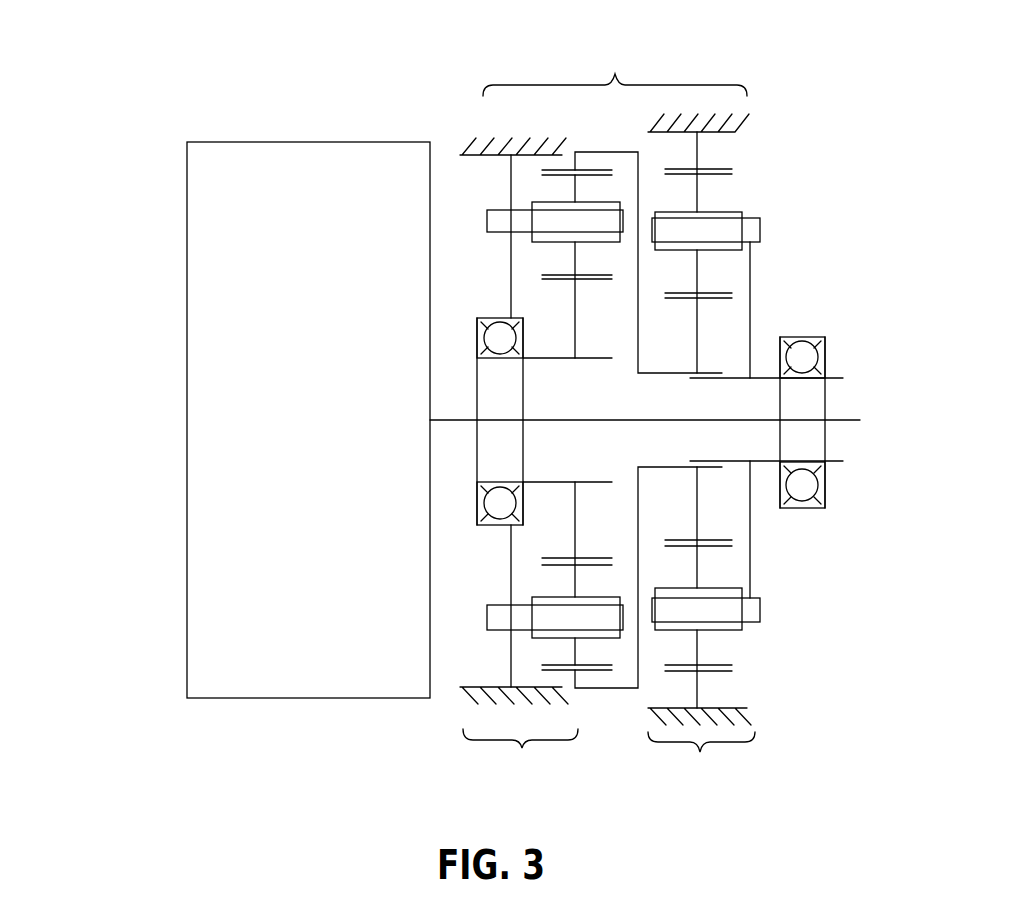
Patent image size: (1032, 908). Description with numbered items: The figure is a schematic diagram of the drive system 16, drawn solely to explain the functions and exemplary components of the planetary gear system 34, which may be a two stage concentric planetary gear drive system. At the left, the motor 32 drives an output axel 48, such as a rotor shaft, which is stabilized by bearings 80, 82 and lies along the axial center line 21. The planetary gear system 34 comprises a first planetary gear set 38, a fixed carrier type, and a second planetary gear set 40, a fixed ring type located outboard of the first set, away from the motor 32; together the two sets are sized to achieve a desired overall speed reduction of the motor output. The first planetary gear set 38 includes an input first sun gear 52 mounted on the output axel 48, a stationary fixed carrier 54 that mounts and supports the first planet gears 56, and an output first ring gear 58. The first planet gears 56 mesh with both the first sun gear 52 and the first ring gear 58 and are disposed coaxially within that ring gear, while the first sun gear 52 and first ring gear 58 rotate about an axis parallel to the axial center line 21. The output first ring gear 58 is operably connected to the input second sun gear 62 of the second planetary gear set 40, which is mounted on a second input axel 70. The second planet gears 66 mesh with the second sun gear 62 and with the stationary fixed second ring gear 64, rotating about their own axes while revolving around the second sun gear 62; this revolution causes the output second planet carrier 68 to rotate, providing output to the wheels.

The drive system 16 is at (155, 92).
The axial center line 21 is at (838, 418).
The motor 32 is at (213, 308).
The planetary gear system 34 is at (615, 69).
The first planetary gear set 38 is at (520, 754).
The second planetary gear set 40 is at (701, 757).
The output axel 48 is at (550, 355).
The input first sun gear 52 is at (575, 316).
The fixed carrier 54 is at (487, 612).
The first planet gears 56 is at (575, 257).
The output first ring gear 58 is at (612, 150).
The input second sun gear 62 is at (697, 337).
The fixed second ring gear 64 is at (697, 193).
The second planet gears 66 is at (697, 272).
The output second planet carrier 68 is at (760, 228).
The second input axel 70 is at (680, 371).
The bearing 80 is at (492, 316).
The bearing 82 is at (803, 334).